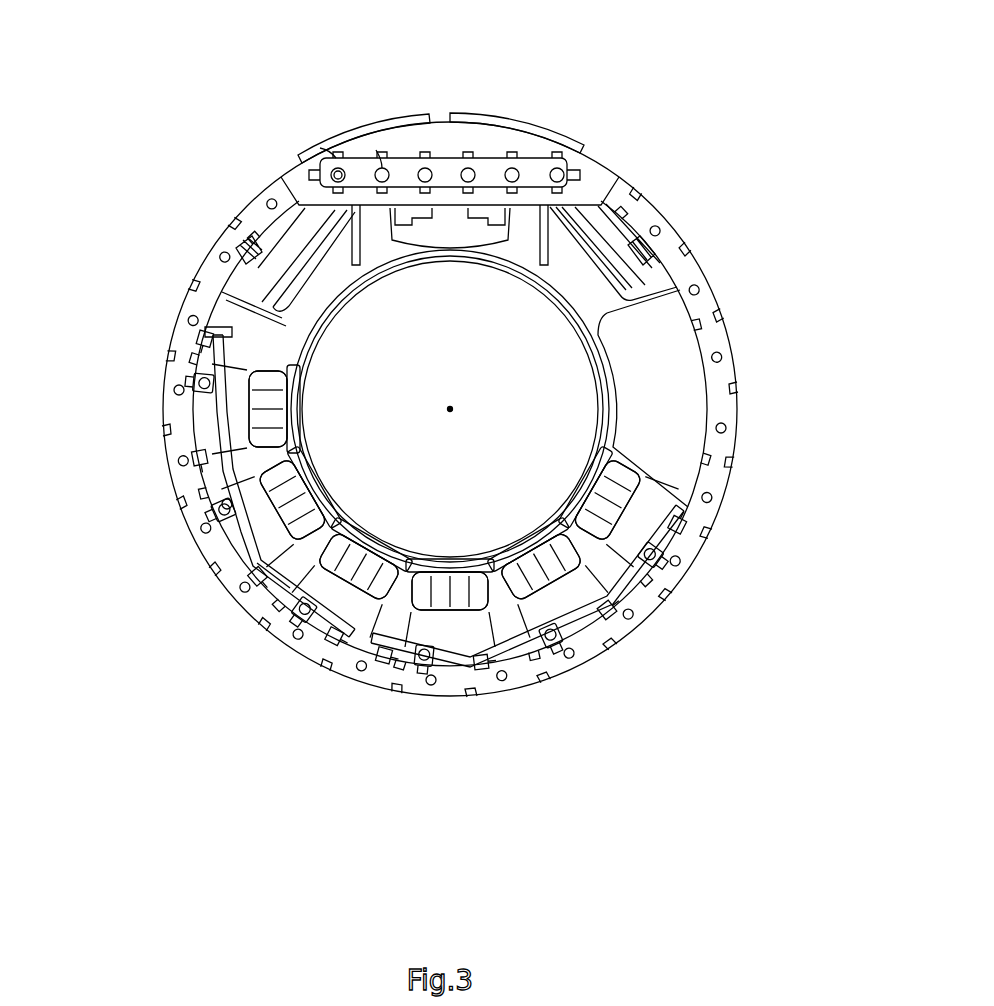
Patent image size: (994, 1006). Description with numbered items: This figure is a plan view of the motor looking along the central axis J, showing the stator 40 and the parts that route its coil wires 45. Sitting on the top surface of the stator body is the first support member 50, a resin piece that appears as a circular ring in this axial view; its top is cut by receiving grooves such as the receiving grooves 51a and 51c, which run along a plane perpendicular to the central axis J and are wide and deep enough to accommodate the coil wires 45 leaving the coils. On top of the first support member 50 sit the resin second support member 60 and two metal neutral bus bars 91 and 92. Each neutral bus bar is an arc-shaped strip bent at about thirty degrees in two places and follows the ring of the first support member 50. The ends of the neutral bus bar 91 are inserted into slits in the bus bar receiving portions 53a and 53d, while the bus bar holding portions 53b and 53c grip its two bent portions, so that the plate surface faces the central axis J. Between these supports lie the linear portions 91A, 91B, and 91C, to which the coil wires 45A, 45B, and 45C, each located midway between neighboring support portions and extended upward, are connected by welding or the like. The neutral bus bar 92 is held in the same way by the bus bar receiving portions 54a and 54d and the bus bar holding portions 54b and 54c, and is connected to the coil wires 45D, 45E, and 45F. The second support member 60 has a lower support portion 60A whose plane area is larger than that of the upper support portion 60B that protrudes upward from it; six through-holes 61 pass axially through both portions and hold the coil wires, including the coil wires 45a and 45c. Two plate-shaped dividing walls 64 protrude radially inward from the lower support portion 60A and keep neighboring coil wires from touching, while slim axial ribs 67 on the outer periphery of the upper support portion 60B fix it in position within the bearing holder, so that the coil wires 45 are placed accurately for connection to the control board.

The stator 40 is at (753, 127).
The coil wires 45 is at (382, 170).
The coil wire 45a is at (250, 267).
The coil wire 45c is at (633, 280).
The coil wire 45A is at (205, 385).
The coil wire 45B is at (236, 538).
The coil wire 45C is at (300, 612).
The coil wire 45D is at (424, 660).
The coil wire 45E is at (551, 640).
The coil wire 45F is at (652, 554).
The first support member 50 is at (704, 339).
The receiving groove 51a is at (295, 236).
The receiving groove 51c is at (597, 219).
The bus bar receiving portion 53a is at (205, 339).
The bus bar holding portion 53b is at (201, 458).
The bus bar holding portion 53c is at (266, 605).
The bus bar receiving portion 53d is at (329, 645).
The bus bar receiving portion 54a is at (384, 658).
The bus bar holding portion 54b is at (481, 665).
The bus bar holding portion 54c is at (608, 609).
The bus bar receiving portion 54d is at (675, 524).
The second support member 60 is at (661, 45).
The lower support portion 60A is at (530, 148).
The upper support portion 60B is at (574, 157).
The through-holes 61 is at (383, 168).
The dividing walls 64 is at (362, 268).
The ribs 67 is at (334, 168).
The neutral bus bar 91 is at (254, 582).
The linear portion 91A is at (217, 407).
The linear portion 91B is at (227, 504).
The linear portion 91C is at (290, 594).
The neutral bus bar 92 is at (620, 590).
The central axis J is at (455, 412).